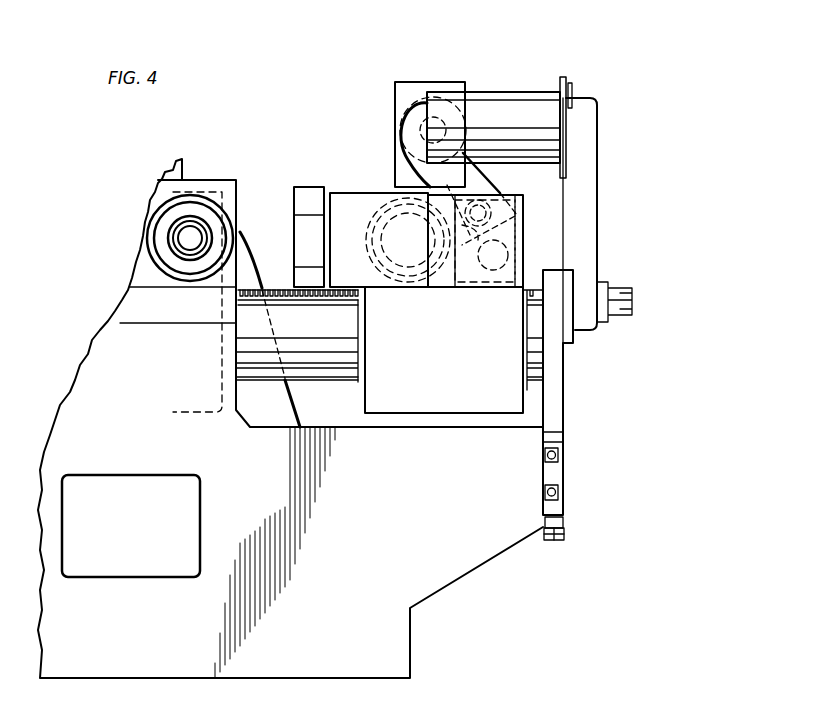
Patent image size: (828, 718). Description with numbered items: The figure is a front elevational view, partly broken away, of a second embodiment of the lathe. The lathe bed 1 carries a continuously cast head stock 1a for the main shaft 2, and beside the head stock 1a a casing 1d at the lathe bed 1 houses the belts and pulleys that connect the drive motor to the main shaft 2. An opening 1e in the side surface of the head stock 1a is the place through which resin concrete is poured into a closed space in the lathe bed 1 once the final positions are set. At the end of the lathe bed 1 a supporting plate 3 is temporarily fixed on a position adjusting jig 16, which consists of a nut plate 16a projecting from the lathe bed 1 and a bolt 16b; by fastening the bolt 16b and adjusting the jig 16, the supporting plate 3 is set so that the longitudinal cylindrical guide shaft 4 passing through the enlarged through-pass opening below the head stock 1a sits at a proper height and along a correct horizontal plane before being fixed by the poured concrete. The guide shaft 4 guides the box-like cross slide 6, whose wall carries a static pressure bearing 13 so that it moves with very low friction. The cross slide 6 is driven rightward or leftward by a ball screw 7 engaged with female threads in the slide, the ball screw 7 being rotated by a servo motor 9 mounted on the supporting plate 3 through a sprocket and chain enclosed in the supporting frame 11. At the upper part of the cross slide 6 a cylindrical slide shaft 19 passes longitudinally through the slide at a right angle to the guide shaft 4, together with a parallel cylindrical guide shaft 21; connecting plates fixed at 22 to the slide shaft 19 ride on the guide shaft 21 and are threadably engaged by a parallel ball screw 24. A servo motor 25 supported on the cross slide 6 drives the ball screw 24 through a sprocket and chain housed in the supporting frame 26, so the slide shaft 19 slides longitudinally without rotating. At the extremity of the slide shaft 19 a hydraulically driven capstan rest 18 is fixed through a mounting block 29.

The lathe bed 1 is at (138, 463).
The head stock 1a is at (237, 180).
The casing 1d is at (267, 417).
The opening 1e is at (243, 238).
The main shaft 2 is at (190, 245).
The supporting plate 3 is at (568, 375).
The guide shaft 4 is at (318, 378).
The cross slide 6 is at (446, 365).
The ball screw 7 is at (280, 290).
The servo motor 9 is at (522, 100).
The supporting frame 11 is at (598, 212).
The bearing 13 is at (345, 383).
The position adjusting jig 16 is at (562, 455).
The nut plate 16a is at (565, 530).
The bolt 16b is at (566, 432).
The capstan rest 18 is at (305, 187).
The slide shaft 19 is at (385, 200).
The guide shaft 21 is at (497, 270).
The fixing point of connecting plate 22 is at (467, 285).
The ball screw 24 is at (500, 208).
The servo motor 25 is at (418, 105).
The supporting frame 26 is at (485, 200).
The mounting block 29 is at (345, 193).